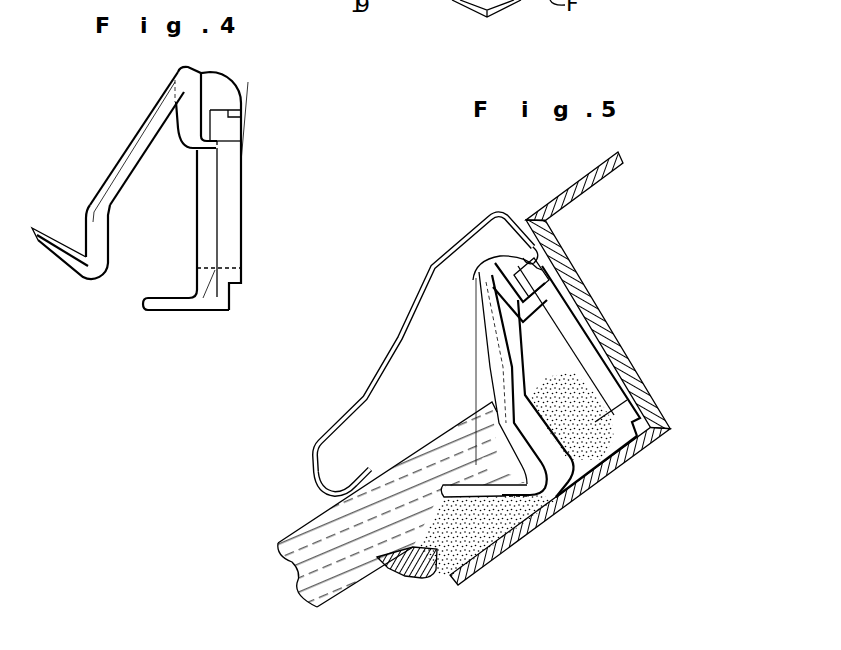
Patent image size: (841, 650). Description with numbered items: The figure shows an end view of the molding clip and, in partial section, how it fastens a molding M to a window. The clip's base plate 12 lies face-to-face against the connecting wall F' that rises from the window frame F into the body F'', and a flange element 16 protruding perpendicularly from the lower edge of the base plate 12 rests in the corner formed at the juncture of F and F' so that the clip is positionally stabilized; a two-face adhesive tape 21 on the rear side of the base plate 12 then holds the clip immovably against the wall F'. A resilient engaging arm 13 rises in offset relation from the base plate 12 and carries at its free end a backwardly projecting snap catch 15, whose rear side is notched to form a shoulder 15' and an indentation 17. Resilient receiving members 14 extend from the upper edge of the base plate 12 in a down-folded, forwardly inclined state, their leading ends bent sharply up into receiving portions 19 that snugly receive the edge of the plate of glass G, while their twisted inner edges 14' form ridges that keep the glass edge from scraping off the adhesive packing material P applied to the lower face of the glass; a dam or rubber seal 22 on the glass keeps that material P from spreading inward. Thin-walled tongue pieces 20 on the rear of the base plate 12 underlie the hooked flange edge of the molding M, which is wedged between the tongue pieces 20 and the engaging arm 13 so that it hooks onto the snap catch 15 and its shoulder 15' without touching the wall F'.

In FIG. 4, the base plate 12 is at (234, 194).
In FIG. 4, the resilient engaging arm 13 is at (205, 206).
In FIG. 4, the resilient receiving members 14 is at (136, 147).
In FIG. 5, the resilient receiving members 14 is at (505, 380).
In FIG. 4, the inner edges of the receiving members 14' is at (76, 214).
In FIG. 4, the snap catch 15 is at (208, 96).
In FIG. 4, the shoulder of the snap catch 15' is at (271, 104).
In FIG. 5, the shoulder of the snap catch 15' is at (538, 246).
In FIG. 4, the flange element 16 is at (170, 311).
In FIG. 5, the flange element 16 is at (616, 454).
In FIG. 4, the indentation 17 is at (218, 122).
In FIG. 4, the receiving portions 19 is at (56, 255).
In FIG. 5, the receiving portions 19 is at (548, 505).
In FIG. 4, the tongue pieces 20 is at (246, 117).
In FIG. 5, the tongue pieces 20 is at (549, 279).
In FIG. 5, the two-face adhesive tape 21 is at (606, 341).
In FIG. 5, the dam or rubber seal 22 is at (410, 577).
In FIG. 5, the molding M is at (433, 278).
In FIG. 5, the plate of glass G is at (423, 462).
In FIG. 5, the adhesive packing material P is at (496, 523).
In FIG. 5, the window frame F is at (560, 506).
In FIG. 5, the connecting wall F' is at (598, 324).
In FIG. 5, the body F'' is at (589, 186).